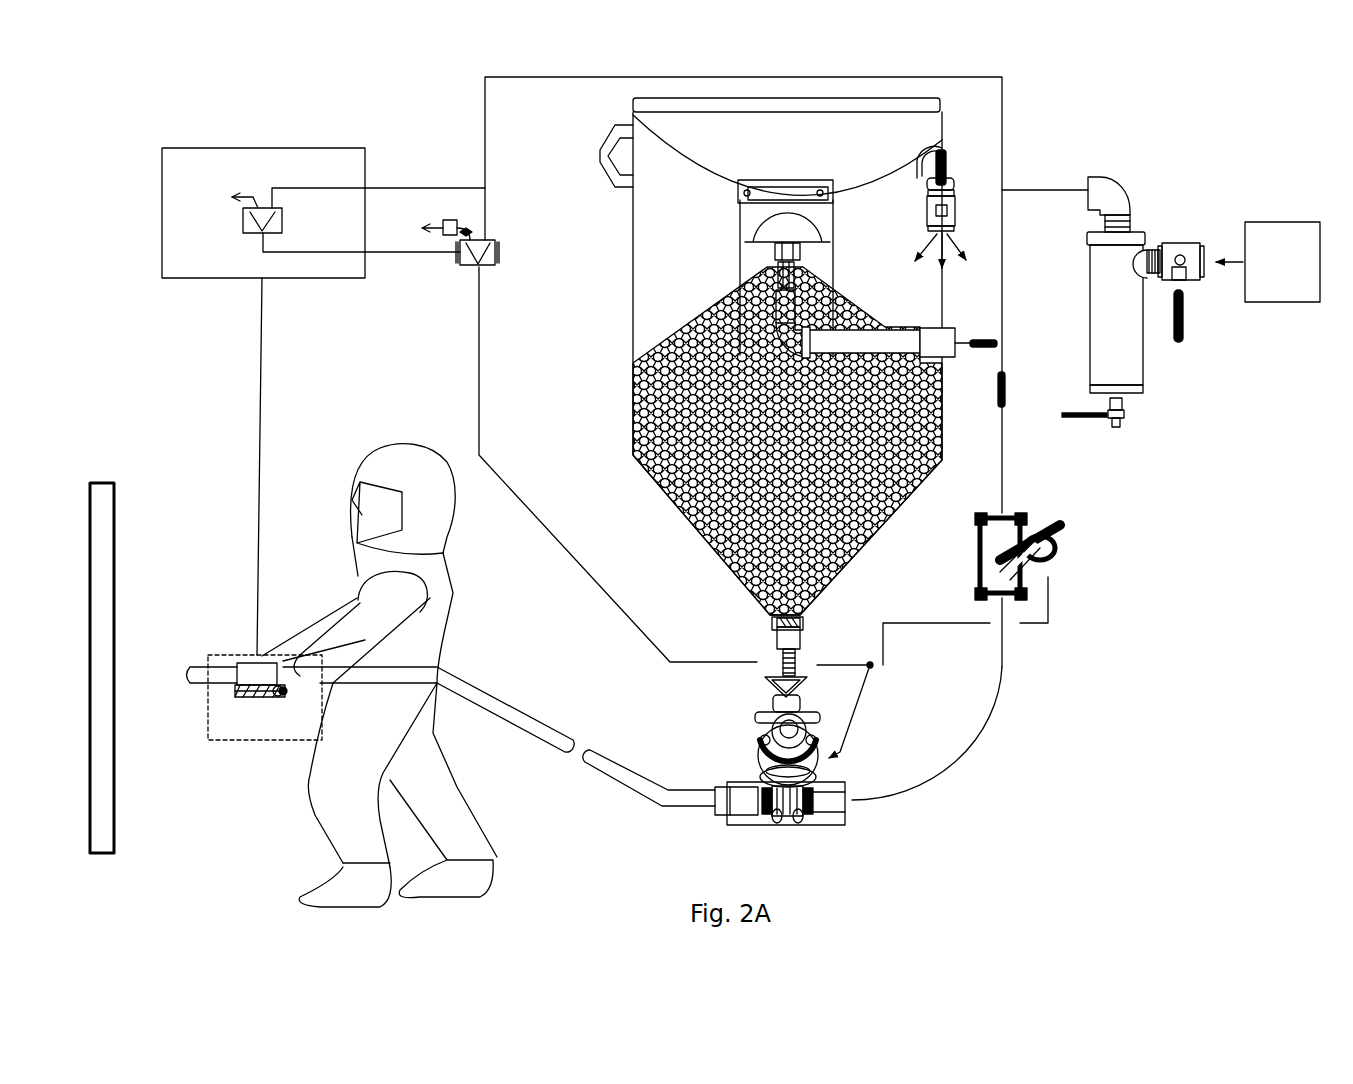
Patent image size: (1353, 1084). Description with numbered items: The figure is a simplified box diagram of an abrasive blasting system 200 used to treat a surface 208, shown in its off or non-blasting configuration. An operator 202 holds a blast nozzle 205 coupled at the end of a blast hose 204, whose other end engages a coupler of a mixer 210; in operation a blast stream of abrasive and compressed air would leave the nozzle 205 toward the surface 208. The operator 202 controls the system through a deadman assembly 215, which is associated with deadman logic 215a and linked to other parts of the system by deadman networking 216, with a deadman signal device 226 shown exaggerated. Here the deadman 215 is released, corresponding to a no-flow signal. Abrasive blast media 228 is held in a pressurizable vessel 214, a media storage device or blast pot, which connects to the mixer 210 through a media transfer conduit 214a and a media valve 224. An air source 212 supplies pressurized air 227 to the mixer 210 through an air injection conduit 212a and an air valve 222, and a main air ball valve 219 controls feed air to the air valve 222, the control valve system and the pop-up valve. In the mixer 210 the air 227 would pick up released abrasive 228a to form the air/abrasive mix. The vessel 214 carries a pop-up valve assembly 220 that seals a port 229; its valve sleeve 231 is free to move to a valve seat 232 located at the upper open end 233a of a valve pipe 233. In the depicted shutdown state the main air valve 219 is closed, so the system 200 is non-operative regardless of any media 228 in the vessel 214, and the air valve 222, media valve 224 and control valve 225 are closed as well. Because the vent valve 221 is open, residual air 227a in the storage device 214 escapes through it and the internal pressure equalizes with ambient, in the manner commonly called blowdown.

The abrasive blasting system 200 is at (122, 152).
The operator 202 is at (457, 787).
The blast hose 204 is at (530, 713).
The blast nozzle 205 is at (210, 682).
The surface 208 is at (115, 773).
The mixer 210 is at (800, 828).
The air source 212 is at (1298, 302).
The air injection conduit 212a is at (977, 733).
The pressurizable vessel 214 is at (895, 550).
The media transfer conduit 214a is at (773, 633).
The deadman assembly 215 is at (252, 697).
The deadman logic 215a is at (217, 147).
The deadman networking 216 is at (255, 388).
The main air ball valve 219 is at (1179, 243).
The pop-up valve assembly 220 is at (835, 233).
The vent valve 221 is at (955, 214).
The air valve 222 is at (1070, 565).
The media valve 224 is at (752, 745).
The control valve 225 is at (500, 252).
The deadman signal device 226 is at (283, 221).
The pressurized air 227 is at (1006, 392).
The residual air 227a is at (968, 264).
The abrasive blast media 228 is at (750, 530).
The released abrasive 228a is at (803, 652).
The port 229 is at (795, 181).
The valve sleeve 231 is at (802, 243).
The valve seat 232 is at (773, 253).
The valve pipe 233 is at (800, 270).
The upper open end 233a is at (774, 273).